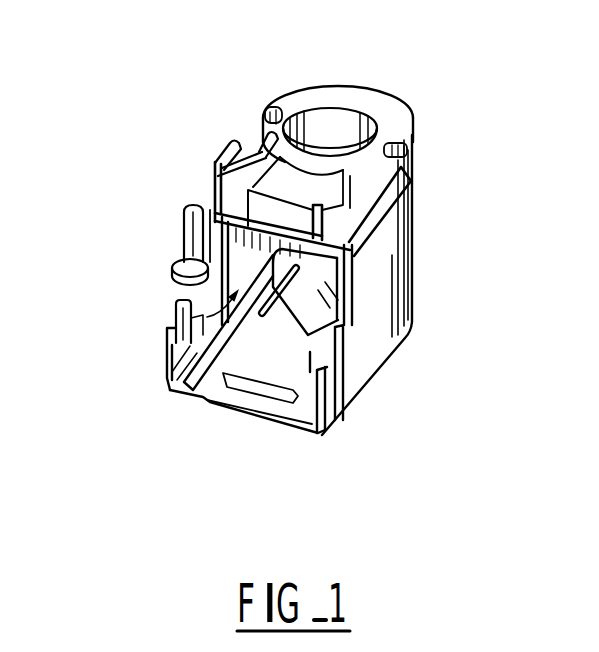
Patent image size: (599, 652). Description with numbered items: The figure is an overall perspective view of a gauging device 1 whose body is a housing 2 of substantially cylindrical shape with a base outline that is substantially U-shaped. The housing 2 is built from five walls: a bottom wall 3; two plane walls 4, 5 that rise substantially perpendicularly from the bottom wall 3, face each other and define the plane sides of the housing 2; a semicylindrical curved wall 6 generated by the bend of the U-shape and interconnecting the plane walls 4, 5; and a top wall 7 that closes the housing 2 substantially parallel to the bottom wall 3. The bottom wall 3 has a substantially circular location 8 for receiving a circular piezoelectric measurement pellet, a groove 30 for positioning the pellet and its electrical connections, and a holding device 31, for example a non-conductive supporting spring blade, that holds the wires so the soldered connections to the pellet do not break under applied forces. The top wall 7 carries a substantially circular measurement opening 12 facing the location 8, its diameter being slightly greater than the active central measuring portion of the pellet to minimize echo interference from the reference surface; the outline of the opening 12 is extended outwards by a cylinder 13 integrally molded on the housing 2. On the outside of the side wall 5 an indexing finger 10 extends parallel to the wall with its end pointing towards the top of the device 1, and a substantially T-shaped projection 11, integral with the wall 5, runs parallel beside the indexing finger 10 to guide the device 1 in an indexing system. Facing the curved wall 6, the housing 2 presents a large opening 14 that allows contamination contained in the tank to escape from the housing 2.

The gauging device 1 is at (235, 90).
The housing 2 is at (257, 322).
The bottom wall 3 is at (293, 433).
The plane wall 4 is at (377, 302).
The plane wall 5 is at (200, 296).
The semicylindrical curved wall 6 is at (413, 222).
The top wall 7 is at (250, 200).
The circular location 8 is at (310, 293).
The indexing finger 10 is at (182, 253).
The projection 11 is at (223, 153).
The measurement opening 12 is at (341, 155).
The cylinder 13 is at (327, 125).
The large opening 14 is at (178, 318).
The groove 30 is at (190, 392).
The holding device 31 is at (266, 316).